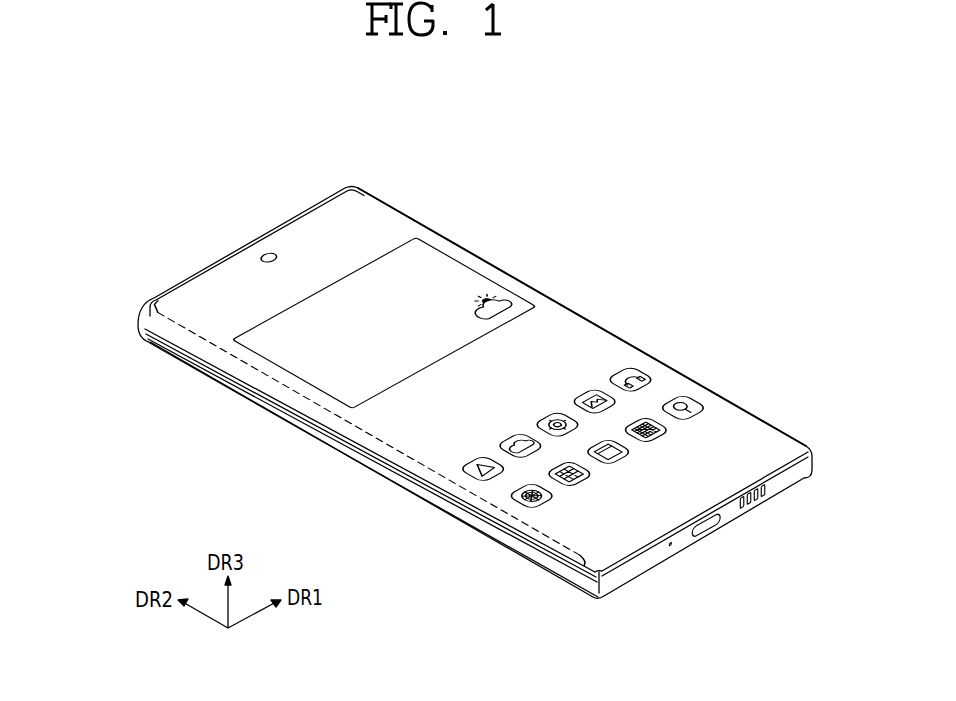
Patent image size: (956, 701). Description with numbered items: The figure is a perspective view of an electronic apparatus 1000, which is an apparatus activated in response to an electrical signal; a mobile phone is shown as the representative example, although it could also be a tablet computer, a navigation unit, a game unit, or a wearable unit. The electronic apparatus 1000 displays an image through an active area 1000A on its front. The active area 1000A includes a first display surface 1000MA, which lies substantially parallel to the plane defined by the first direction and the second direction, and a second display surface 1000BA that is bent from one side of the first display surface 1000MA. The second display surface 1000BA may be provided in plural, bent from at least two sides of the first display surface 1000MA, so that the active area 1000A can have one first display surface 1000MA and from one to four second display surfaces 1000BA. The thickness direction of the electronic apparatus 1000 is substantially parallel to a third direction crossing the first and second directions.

The electronic apparatus 1000 is at (433, 373).
The active area 1000A is at (384, 372).
The first display surface 1000MA is at (218, 302).
The second display surface 1000BA is at (343, 403).